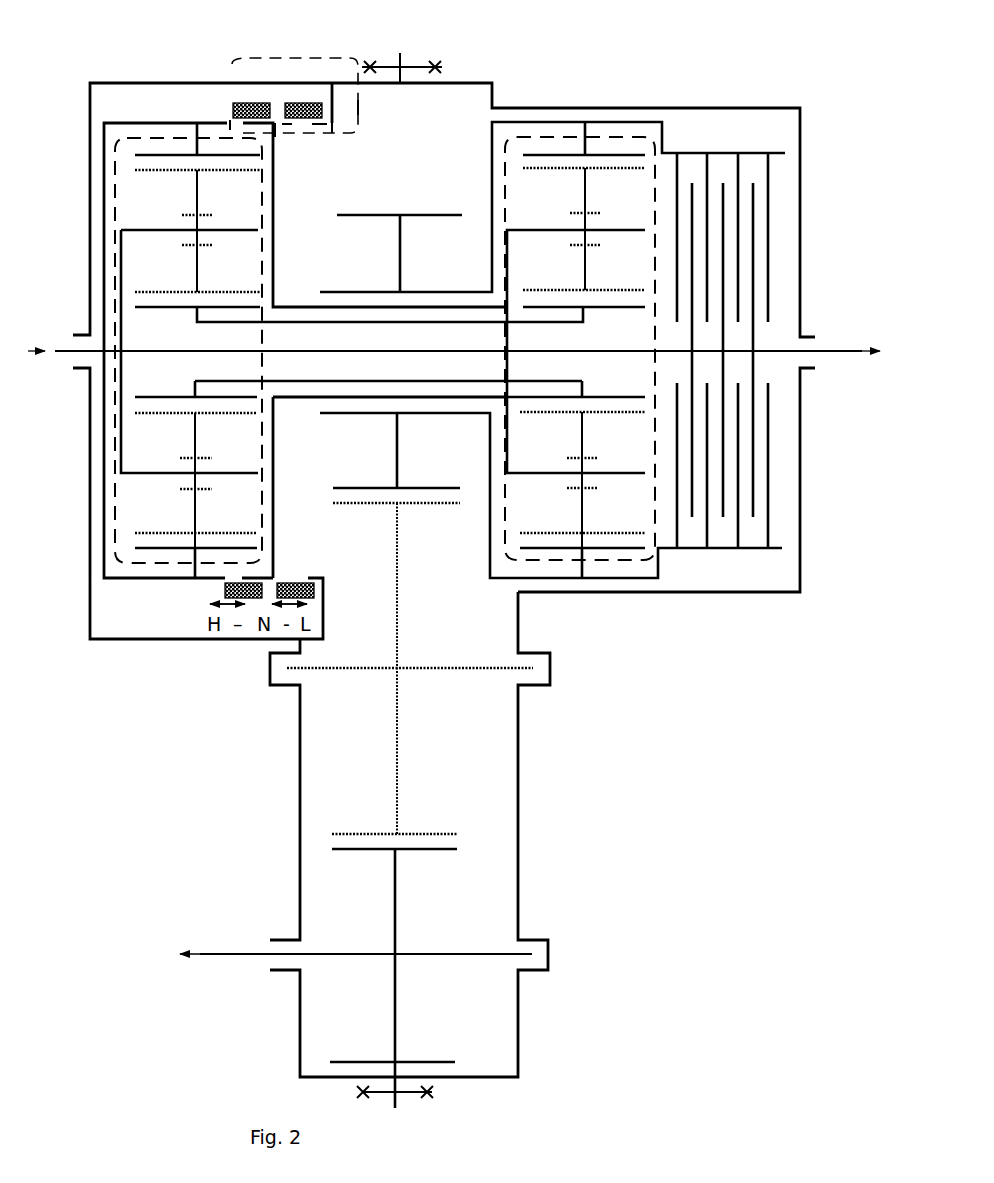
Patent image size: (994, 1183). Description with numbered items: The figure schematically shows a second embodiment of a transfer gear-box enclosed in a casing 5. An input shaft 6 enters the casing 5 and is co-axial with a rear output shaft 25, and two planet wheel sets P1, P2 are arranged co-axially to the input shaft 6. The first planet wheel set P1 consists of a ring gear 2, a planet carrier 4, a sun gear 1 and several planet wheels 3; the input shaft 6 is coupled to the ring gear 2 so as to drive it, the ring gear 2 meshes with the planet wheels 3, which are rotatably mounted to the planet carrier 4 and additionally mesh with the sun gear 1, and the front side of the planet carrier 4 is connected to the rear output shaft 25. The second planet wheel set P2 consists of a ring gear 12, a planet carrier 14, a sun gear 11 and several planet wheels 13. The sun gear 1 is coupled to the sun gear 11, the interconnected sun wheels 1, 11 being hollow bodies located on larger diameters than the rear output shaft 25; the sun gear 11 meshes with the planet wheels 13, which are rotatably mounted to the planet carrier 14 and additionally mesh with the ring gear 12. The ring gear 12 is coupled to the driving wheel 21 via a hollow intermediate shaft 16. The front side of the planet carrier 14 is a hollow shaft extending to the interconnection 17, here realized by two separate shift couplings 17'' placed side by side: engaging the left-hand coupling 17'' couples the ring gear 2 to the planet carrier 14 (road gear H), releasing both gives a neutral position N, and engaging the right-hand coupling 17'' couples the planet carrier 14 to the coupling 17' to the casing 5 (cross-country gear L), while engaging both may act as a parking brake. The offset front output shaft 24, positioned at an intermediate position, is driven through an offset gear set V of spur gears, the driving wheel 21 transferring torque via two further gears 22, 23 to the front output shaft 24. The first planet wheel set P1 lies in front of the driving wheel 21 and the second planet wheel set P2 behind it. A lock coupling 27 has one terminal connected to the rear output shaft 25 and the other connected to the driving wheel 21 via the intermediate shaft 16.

The sun gear 1 is at (358, 435).
The ring gear 2 is at (170, 148).
The planet wheels 3 is at (205, 455).
The planet carrier 4 is at (189, 341).
The casing 5 is at (444, 350).
The input shaft 6 is at (264, 338).
The sun gear 11 is at (522, 434).
The ring gear 12 is at (620, 145).
The planet wheels 13 is at (598, 452).
The planet carrier 14 is at (576, 340).
The intermediate shaft 16 is at (552, 222).
The interconnection 17 is at (274, 67).
The coupling to the casing 17' is at (300, 144).
The shift couplings 17'' is at (246, 82).
The driving wheel 21 is at (399, 172).
The gear 22 is at (534, 608).
The gear 23 is at (393, 971).
The front output shaft 24 is at (356, 941).
The rear output shaft 25 is at (690, 338).
The lock coupling 27 is at (743, 349).
The first planet wheel set P1 is at (163, 567).
The second planet wheel set P2 is at (638, 560).
The offset gear set V is at (547, 773).